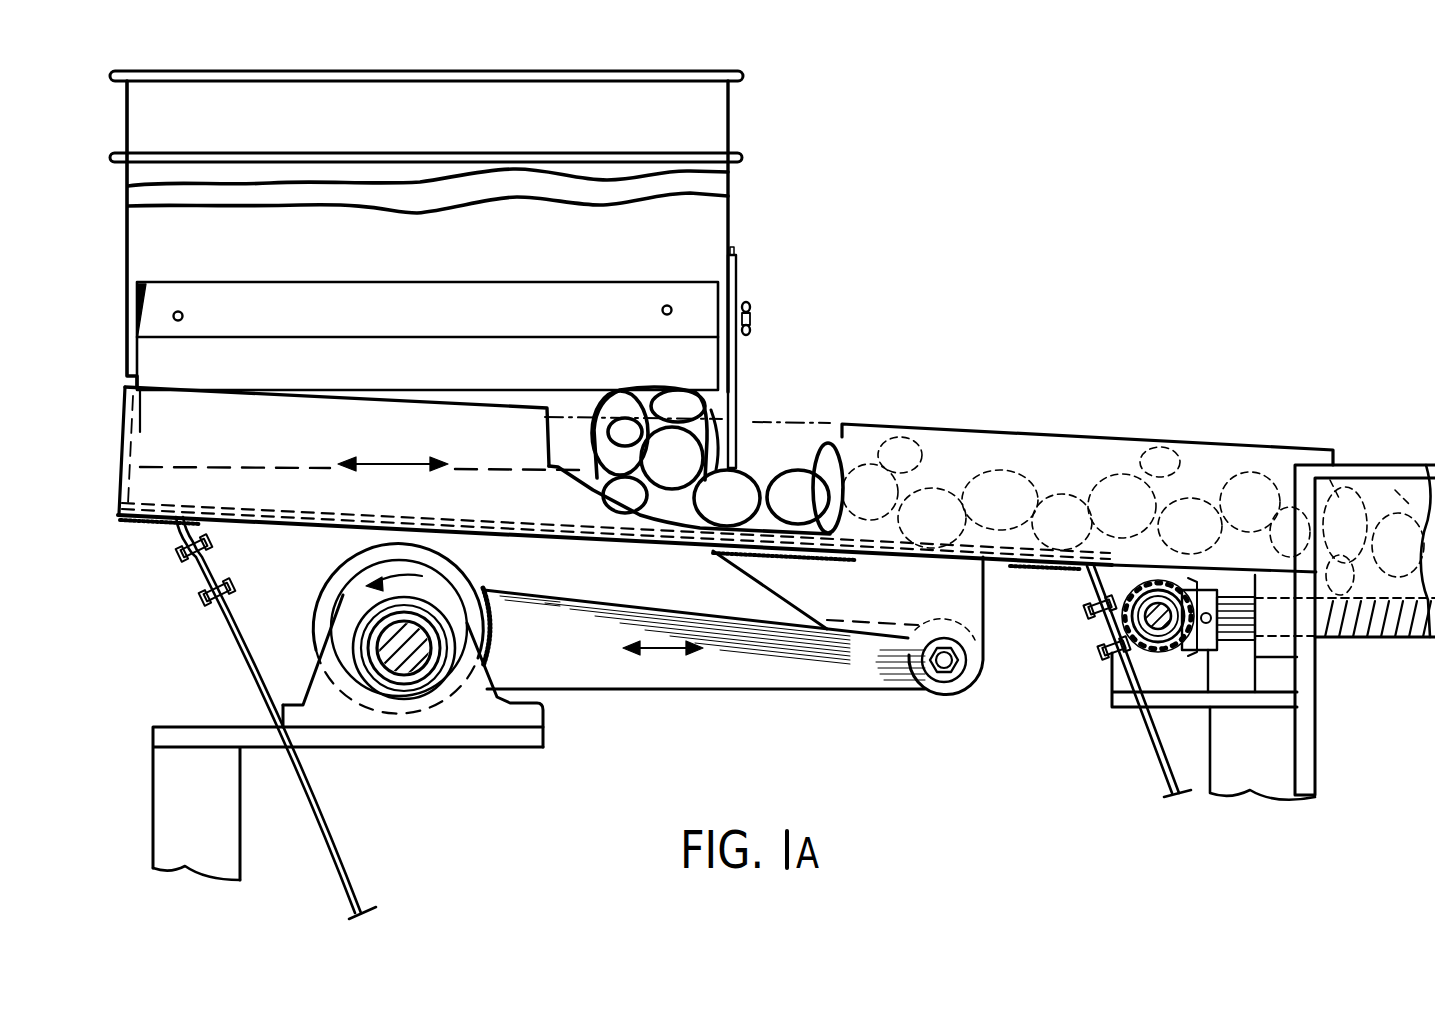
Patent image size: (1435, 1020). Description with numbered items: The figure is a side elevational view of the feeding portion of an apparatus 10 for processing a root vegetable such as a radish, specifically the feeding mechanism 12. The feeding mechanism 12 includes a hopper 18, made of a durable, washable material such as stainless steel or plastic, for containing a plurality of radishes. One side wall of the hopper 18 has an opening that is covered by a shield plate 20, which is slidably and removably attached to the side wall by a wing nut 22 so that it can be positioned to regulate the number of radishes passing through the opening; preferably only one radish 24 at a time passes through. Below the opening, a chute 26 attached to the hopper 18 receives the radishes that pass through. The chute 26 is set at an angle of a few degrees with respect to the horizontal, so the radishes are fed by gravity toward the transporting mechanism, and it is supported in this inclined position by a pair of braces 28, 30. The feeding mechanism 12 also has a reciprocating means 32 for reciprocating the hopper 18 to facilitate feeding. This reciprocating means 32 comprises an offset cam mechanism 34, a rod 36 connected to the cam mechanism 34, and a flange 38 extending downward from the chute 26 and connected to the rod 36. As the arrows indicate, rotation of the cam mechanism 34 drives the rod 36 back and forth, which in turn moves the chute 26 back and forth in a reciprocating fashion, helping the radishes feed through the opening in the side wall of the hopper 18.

The apparatus 10 is at (1131, 190).
The feeding mechanism 12 is at (910, 250).
The hopper 18 is at (733, 227).
The shield plate 20 is at (745, 408).
The wing nut 22 is at (750, 306).
The radish 24 is at (803, 456).
The chute 26 is at (1062, 440).
The brace 28 is at (236, 649).
The brace 30 is at (1146, 734).
The reciprocating means 32 is at (648, 720).
The offset cam mechanism 34 is at (344, 597).
The rod 36 is at (822, 684).
The flange 38 is at (983, 616).